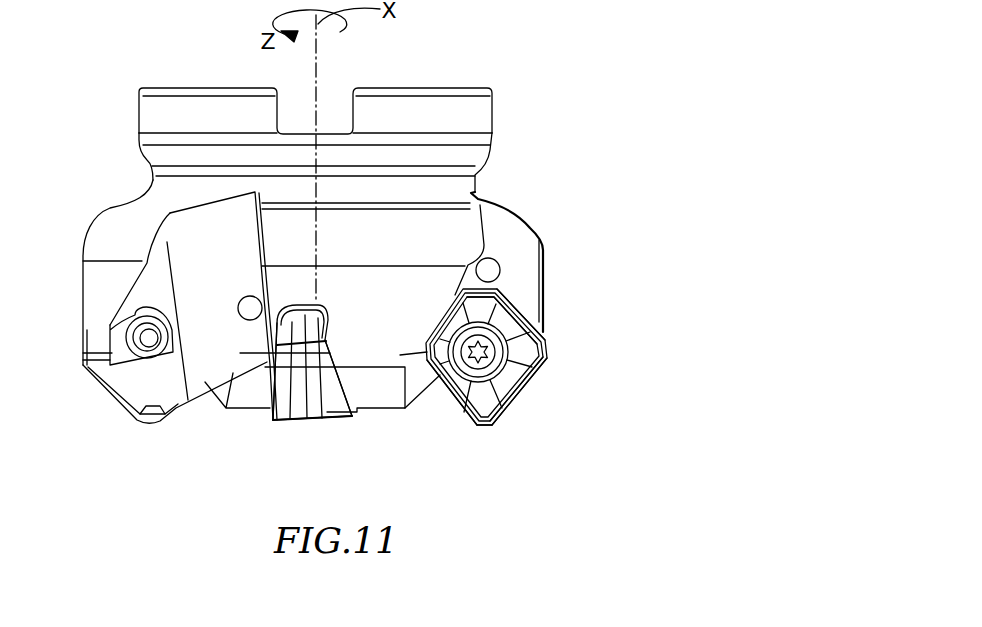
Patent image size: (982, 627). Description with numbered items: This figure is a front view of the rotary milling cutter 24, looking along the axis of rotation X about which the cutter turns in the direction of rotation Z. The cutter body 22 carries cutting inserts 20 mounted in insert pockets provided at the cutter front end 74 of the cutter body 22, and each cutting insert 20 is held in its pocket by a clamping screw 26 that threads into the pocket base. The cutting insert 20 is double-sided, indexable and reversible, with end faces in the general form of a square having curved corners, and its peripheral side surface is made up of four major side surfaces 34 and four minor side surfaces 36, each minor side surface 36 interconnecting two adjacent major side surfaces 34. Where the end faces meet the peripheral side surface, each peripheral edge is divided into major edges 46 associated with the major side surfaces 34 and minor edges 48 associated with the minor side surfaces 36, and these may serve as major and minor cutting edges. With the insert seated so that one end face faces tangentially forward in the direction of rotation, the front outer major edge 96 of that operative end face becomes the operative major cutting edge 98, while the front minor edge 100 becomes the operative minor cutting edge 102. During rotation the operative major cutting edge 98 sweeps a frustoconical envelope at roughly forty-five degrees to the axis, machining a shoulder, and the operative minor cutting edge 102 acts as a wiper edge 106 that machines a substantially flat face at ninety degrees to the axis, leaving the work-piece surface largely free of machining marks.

The cutting insert 20 is at (565, 352).
The cutter body 22 is at (540, 232).
The rotary milling cutter 24 is at (548, 157).
The clamping screw 26 is at (520, 395).
The major side surface 34 is at (293, 422).
The minor side surface 36 is at (270, 366).
The major edge 46 is at (517, 310).
The minor edge 48 is at (548, 348).
The cutter front end 74 is at (388, 423).
The front outer major edge 96 is at (429, 429).
The operative major cutting edge 98 is at (522, 385).
The front minor edge 100 is at (572, 462).
The operative minor cutting edge 102 is at (572, 462).
The wiper edge 106 is at (481, 425).